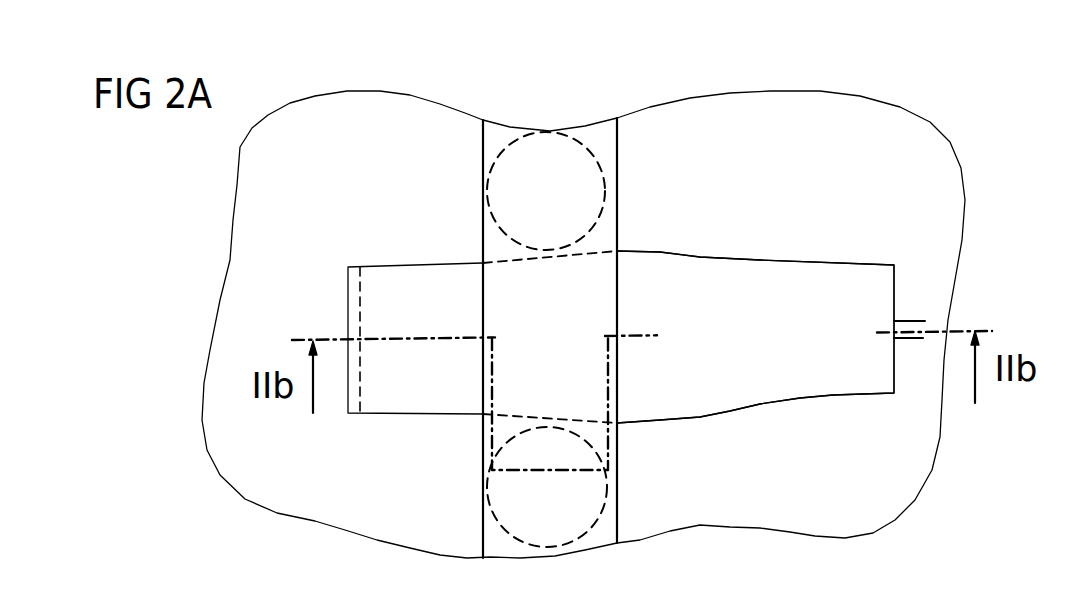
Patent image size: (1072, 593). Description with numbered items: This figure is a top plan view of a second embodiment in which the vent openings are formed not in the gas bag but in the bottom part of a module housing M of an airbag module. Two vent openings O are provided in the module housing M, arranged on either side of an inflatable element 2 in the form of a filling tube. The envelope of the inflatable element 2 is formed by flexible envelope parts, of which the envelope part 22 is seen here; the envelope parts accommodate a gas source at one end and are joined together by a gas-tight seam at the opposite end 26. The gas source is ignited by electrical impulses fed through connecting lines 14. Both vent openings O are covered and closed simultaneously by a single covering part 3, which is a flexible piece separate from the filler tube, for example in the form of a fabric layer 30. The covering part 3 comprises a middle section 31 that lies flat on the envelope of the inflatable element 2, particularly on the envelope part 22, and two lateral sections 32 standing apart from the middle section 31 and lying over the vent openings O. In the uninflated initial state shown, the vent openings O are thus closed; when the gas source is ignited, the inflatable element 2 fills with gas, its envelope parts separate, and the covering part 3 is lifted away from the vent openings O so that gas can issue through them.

The module housing M is at (375, 89).
The inflatable element 2 is at (797, 411).
The envelope part 22 is at (820, 283).
The opposite end 26 is at (356, 310).
The lateral sections 32 is at (498, 138).
The vent opening O is at (551, 158).
The covering part 3 is at (480, 304).
The middle section 31 is at (497, 400).
The fabric layer 30 is at (610, 495).
The connecting lines 14 is at (905, 339).